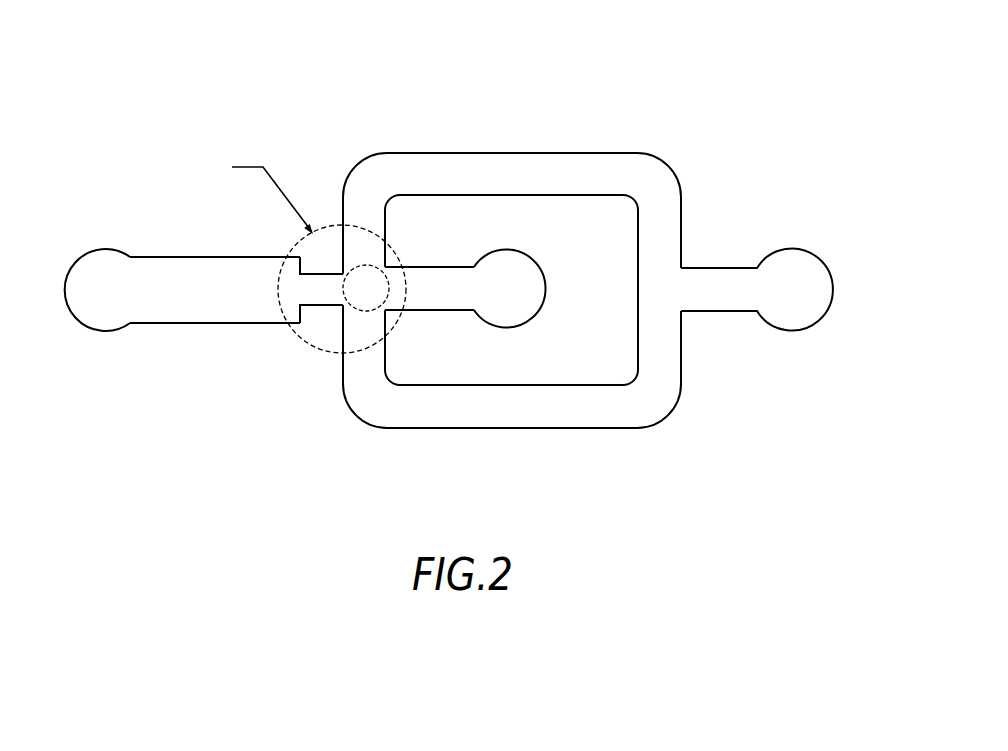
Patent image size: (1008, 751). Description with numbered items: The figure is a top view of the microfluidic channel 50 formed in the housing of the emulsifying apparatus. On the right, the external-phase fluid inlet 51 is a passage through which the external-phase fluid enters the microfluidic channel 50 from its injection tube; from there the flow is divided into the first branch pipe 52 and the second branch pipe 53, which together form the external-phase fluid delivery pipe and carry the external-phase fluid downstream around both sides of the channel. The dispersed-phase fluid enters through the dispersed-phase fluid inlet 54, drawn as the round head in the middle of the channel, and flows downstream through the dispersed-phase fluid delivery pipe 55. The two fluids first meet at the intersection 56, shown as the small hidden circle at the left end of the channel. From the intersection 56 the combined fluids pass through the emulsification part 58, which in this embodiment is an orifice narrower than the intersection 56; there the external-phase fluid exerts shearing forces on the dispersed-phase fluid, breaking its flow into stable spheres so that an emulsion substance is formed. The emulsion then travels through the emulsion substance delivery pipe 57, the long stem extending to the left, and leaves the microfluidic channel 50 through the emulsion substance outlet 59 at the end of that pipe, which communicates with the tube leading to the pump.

The microfluidic channel 50 is at (236, 83).
The external-phase fluid inlet 51 is at (805, 267).
The first branch pipe 52 is at (548, 413).
The second branch pipe 53 is at (557, 167).
The dispersed-phase fluid inlet 54 is at (512, 273).
The dispersed-phase fluid delivery pipe 55 is at (432, 292).
The intersection 56 is at (348, 313).
The emulsion substance delivery pipe 57 is at (213, 283).
The emulsification part 58 is at (320, 292).
The emulsion substance outlet 59 is at (95, 275).